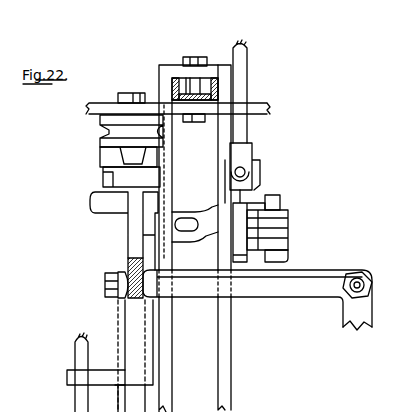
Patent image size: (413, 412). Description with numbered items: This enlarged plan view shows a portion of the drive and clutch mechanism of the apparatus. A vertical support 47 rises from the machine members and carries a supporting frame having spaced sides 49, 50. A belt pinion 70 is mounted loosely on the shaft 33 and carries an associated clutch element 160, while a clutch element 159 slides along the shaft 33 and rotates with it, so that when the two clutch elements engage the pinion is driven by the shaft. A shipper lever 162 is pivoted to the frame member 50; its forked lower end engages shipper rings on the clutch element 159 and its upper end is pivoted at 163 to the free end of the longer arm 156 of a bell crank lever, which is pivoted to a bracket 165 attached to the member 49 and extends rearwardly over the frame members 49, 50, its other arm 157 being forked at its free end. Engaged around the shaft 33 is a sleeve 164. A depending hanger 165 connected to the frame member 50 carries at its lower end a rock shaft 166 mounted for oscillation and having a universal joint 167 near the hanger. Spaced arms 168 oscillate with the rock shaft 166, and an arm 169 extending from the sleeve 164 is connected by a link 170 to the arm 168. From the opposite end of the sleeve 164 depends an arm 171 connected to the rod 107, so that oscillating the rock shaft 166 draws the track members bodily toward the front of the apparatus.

The vertical support 47 is at (187, 80).
The rock shaft 166 is at (247, 75).
The belt pinion 70 is at (102, 133).
The clutch element 160 is at (103, 153).
The clutch element 159 is at (103, 174).
The arm 169 is at (184, 224).
The universal joint 167 is at (260, 163).
The hanger 165 is at (262, 195).
The spaced arms 168 is at (280, 213).
The link 170 is at (282, 222).
The sleeve 164 is at (369, 274).
The shipper lever 162 is at (128, 228).
The pivot 163 is at (105, 287).
The frame side 50 is at (172, 340).
The frame side 49 is at (227, 340).
The arm of bell crank lever 156 is at (313, 282).
The arm of bell crank lever 157 is at (360, 312).
The rod 107 is at (83, 350).
The arm 171 is at (72, 378).
The shaft 33 is at (128, 393).